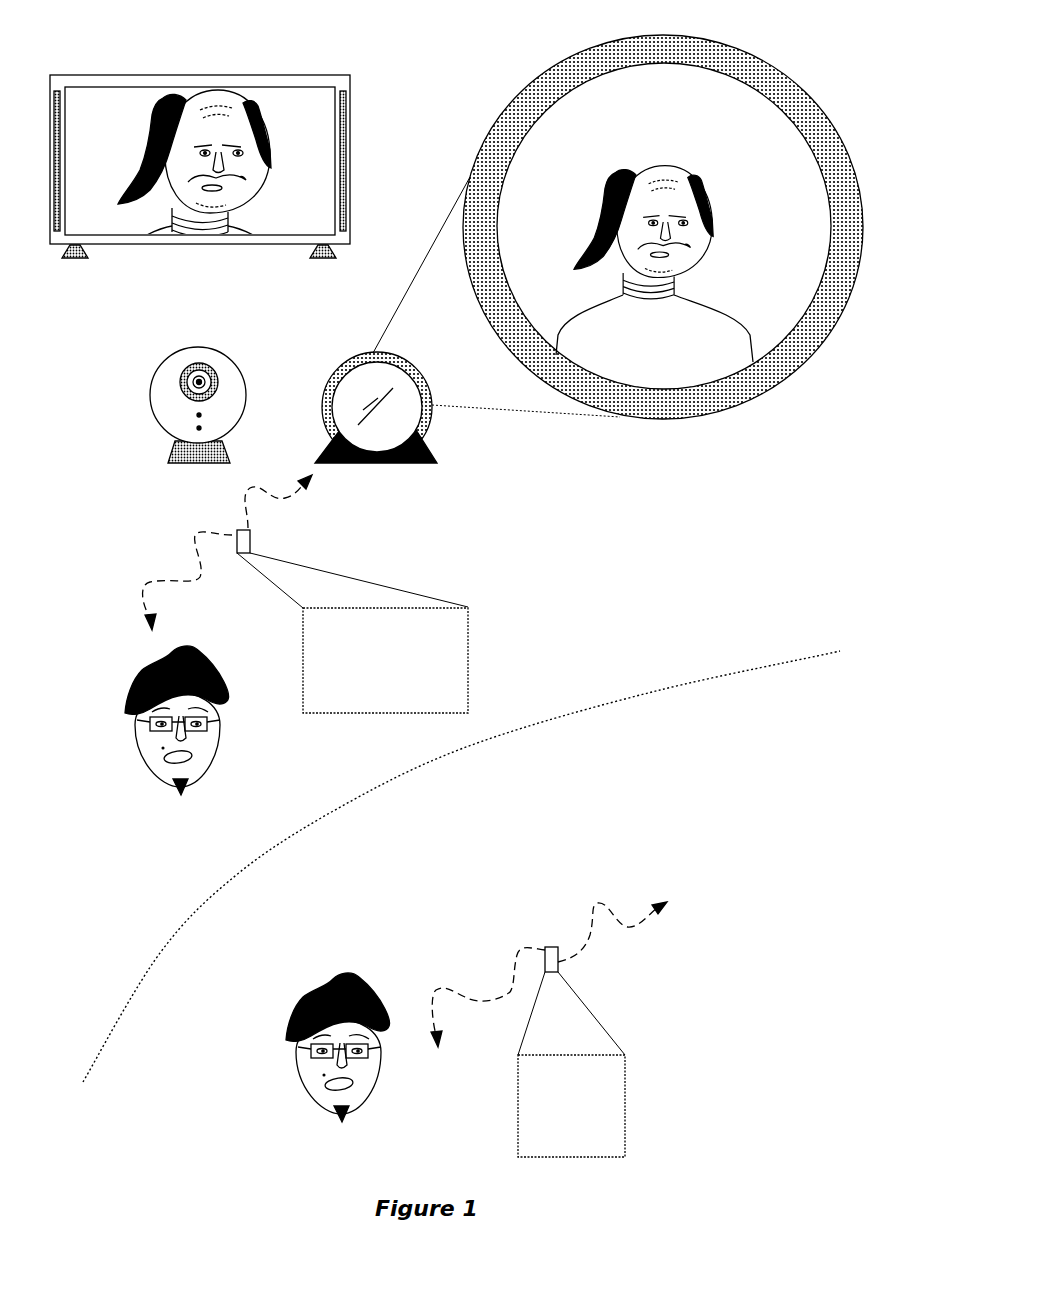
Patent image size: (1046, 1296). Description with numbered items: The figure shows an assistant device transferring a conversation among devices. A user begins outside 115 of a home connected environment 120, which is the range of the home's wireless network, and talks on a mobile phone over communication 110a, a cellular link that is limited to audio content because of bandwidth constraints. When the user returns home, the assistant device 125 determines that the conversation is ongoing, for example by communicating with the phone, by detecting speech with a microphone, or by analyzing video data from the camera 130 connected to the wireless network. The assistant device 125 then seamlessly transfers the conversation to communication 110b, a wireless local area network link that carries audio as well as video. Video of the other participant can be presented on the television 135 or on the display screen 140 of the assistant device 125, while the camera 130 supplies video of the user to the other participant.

The communication 110a is at (550, 946).
The communication 110b is at (242, 528).
The outside 115 is at (776, 731).
The home connected environment 120 is at (461, 848).
The assistant device 125 is at (425, 465).
The camera 130 is at (195, 347).
The television 135 is at (260, 75).
The display screen 140 is at (732, 47).